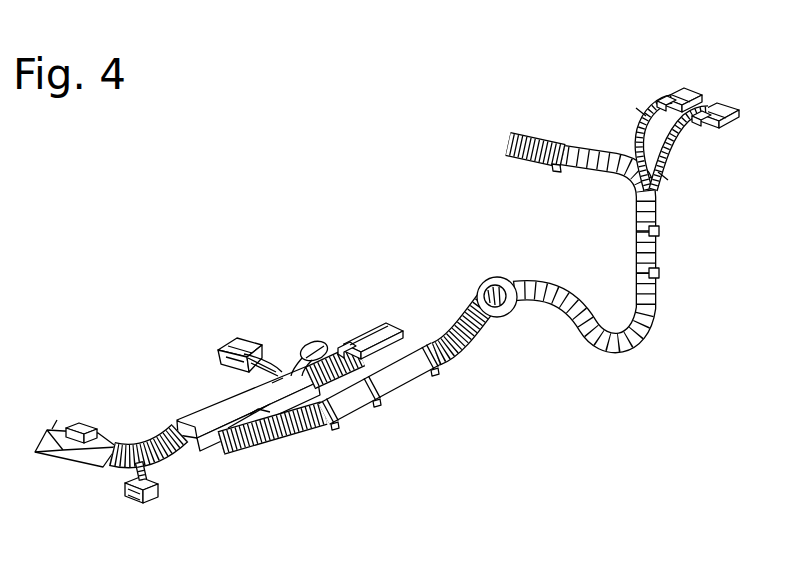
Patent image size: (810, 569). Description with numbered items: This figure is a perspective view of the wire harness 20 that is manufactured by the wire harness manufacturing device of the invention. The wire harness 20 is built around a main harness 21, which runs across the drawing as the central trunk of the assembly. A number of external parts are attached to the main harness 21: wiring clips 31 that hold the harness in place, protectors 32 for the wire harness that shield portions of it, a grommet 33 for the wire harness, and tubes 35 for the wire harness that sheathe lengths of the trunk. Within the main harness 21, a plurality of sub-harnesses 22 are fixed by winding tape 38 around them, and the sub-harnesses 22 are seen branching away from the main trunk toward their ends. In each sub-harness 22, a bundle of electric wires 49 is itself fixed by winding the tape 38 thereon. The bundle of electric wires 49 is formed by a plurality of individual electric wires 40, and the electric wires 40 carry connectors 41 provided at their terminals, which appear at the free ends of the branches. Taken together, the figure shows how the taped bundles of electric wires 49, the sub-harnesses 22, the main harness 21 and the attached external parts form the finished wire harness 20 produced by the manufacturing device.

The wire harness 20 is at (244, 119).
The main harness 21 is at (147, 440).
The sub-harness 22 is at (637, 131).
The wiring clip 31 is at (660, 273).
The protector 32 is at (73, 453).
The grommet 33 is at (506, 281).
The tube 35 is at (290, 434).
The tape 38 is at (640, 258).
The electric wire 40 is at (660, 102).
The connector 41 is at (680, 92).
The bundle of electric wires 49 is at (633, 112).